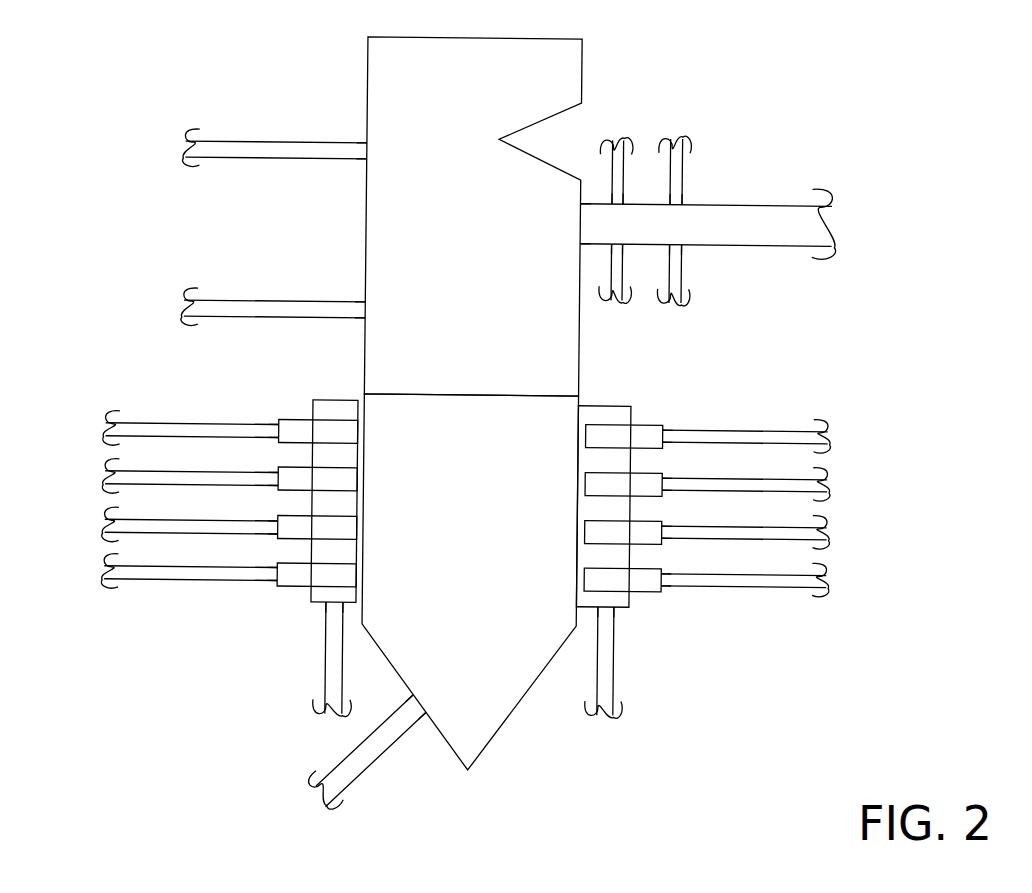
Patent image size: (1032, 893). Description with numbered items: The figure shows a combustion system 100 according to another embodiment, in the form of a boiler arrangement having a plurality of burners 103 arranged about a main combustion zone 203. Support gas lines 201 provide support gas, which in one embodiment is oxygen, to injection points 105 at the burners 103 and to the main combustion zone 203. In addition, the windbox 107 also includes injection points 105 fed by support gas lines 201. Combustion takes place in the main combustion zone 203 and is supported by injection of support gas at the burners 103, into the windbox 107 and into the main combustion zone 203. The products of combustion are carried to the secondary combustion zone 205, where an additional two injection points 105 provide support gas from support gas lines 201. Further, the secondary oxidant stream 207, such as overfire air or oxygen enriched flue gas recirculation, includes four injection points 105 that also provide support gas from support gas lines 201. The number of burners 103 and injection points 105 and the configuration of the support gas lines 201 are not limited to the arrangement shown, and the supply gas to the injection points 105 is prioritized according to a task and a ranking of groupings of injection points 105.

The combustion system 100 is at (889, 105).
The burners 103 is at (282, 422).
The injection points 105 is at (367, 146).
The windbox 107 is at (339, 400).
The support gas lines 201 is at (271, 144).
The main combustion zone 203 is at (488, 514).
The secondary combustion zone 205 is at (490, 246).
The secondary oxidant stream 207 is at (696, 238).